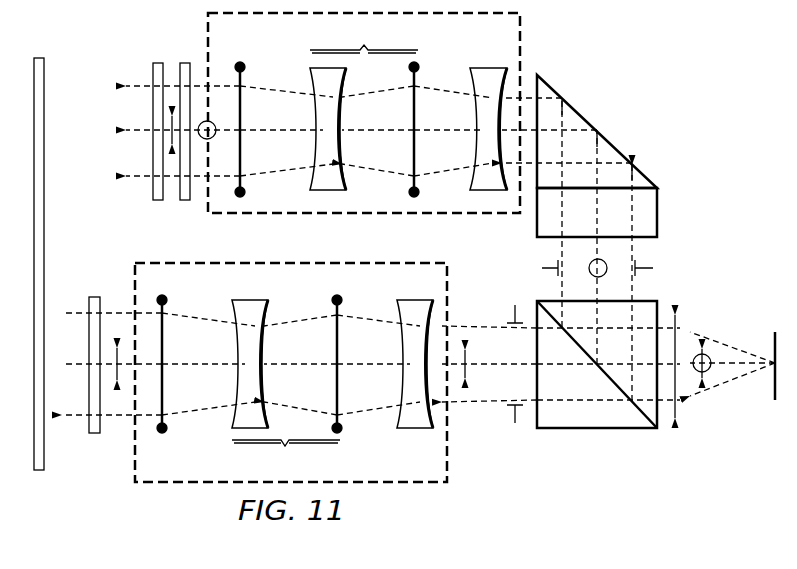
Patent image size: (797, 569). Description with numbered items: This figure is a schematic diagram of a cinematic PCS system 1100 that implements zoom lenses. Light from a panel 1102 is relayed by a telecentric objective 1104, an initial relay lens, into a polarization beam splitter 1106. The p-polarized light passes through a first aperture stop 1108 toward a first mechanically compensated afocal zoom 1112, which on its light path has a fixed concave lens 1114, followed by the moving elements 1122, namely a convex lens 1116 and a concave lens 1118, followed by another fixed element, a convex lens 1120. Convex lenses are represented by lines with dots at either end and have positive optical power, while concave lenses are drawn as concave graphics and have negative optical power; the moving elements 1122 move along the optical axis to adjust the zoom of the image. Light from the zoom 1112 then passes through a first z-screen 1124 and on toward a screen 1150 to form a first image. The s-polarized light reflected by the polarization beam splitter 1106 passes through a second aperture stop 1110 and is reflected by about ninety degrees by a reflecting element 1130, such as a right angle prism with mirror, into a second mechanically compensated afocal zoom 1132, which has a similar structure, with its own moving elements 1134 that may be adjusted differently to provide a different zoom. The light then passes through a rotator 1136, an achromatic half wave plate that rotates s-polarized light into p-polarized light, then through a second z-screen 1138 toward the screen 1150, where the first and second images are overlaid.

The cinematic PCS system 1100 is at (702, 43).
The panel 1102 is at (774, 334).
The telecentric objective 1104 is at (705, 375).
The polarization beam splitter 1106 is at (597, 429).
The first aperture stop 1108 is at (512, 304).
The second aperture stop 1110 is at (653, 268).
The first mechanically compensated afocal zoom 1112 is at (456, 465).
The concave lens 1114 is at (413, 430).
The convex lens 1116 is at (335, 328).
The concave lens 1118 is at (268, 310).
The convex lens 1120 is at (165, 397).
The moving elements 1122 is at (286, 459).
The first z-screen 1124 is at (97, 435).
The reflecting element 1130 is at (658, 212).
The second mechanically compensated afocal zoom 1132 is at (530, 29).
The moving elements 1134 is at (364, 105).
The rotator 1136 is at (185, 62).
The second z-screen 1138 is at (158, 202).
The screen 1150 is at (38, 472).